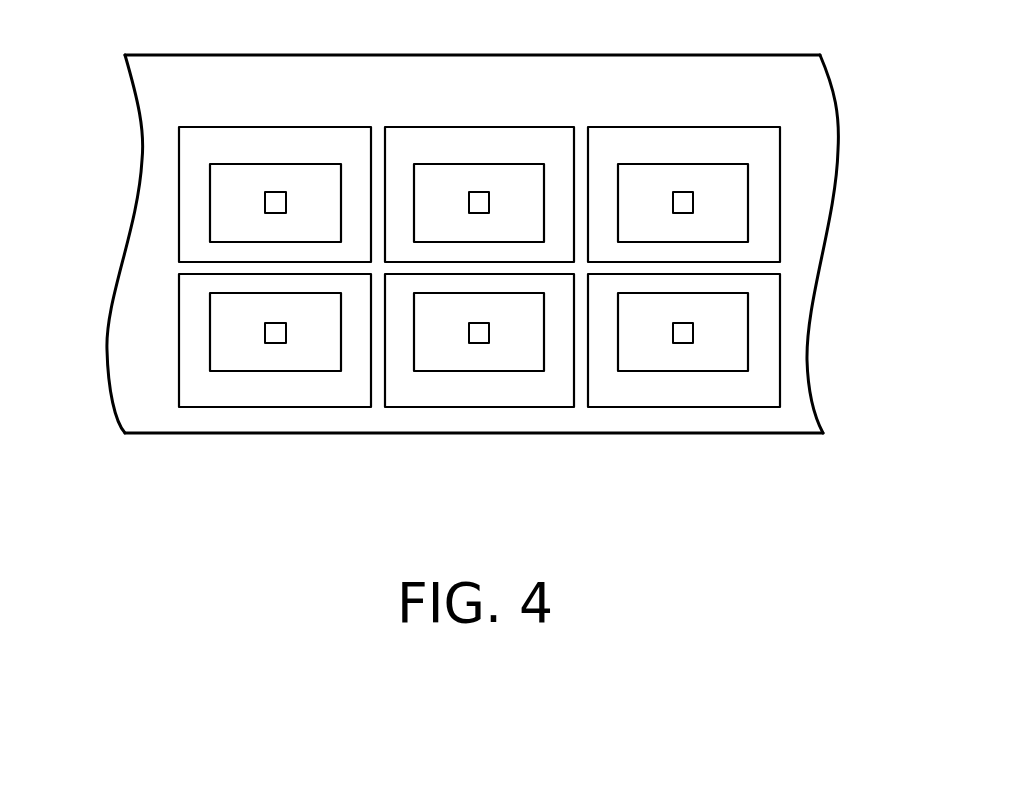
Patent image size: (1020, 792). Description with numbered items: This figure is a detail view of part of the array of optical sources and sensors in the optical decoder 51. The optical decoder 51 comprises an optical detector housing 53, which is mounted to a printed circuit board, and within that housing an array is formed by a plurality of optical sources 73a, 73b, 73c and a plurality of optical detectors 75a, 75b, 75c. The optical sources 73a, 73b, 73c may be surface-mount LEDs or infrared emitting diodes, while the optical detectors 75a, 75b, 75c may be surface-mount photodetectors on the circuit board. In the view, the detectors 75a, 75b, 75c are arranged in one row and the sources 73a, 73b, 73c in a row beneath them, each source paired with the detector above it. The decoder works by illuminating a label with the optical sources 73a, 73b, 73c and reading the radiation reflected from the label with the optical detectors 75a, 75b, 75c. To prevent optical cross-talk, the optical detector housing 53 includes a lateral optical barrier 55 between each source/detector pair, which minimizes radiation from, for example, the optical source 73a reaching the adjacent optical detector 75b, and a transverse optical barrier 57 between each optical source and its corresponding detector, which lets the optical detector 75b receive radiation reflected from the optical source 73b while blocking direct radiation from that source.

The optical decoder 51 is at (433, 512).
The optical detector housing 53 is at (170, 67).
The lateral optical barrier 55 is at (368, 390).
The transverse optical barrier 57 is at (743, 260).
The optical source 73a is at (223, 345).
The optical source 73b is at (492, 358).
The optical source 73c is at (738, 320).
The optical detector 75a is at (223, 207).
The optical detector 75b is at (480, 175).
The optical detector 75c is at (740, 184).